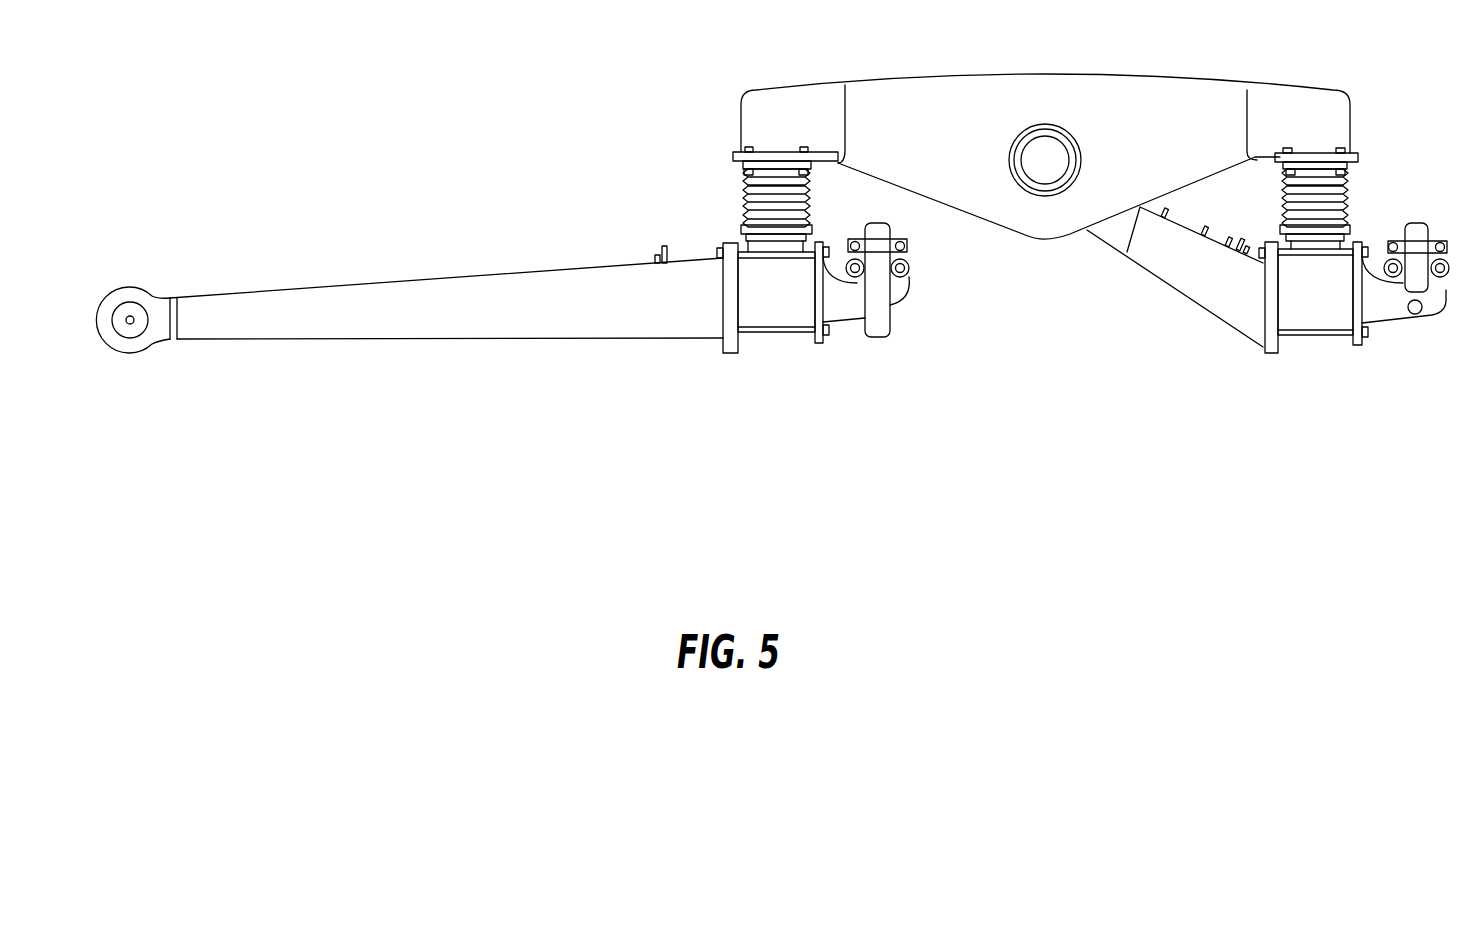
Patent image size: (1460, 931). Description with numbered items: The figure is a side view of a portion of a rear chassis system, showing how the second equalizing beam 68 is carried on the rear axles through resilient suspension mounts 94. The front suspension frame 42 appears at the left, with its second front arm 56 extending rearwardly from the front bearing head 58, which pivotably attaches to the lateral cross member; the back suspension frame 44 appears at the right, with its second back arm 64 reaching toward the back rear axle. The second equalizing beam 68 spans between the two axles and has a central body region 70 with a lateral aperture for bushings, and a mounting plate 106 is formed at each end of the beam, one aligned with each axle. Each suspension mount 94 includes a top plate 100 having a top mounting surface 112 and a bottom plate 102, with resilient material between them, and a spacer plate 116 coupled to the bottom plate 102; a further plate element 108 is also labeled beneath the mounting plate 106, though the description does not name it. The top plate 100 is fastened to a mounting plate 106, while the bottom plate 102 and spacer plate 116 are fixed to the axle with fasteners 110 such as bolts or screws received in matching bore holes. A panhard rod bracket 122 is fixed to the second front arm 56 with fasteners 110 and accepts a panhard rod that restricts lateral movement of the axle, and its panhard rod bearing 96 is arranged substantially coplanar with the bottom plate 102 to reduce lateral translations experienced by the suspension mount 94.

The front suspension frame 42 is at (358, 333).
The back suspension frame 44 is at (1247, 312).
The second front arm 56 is at (308, 298).
The front bearing head 58 is at (122, 302).
The second back arm 64 is at (1178, 258).
The second equalizing beam 68 is at (1076, 73).
The central body region 70 is at (1006, 93).
The resilient suspension mount 94 is at (738, 205).
The panhard rod bearing 96 is at (888, 223).
The top plate 100 is at (845, 85).
The bottom plate 102 is at (817, 227).
The mounting plate 106 is at (758, 152).
The plate 108 is at (743, 166).
The fasteners 110 is at (798, 152).
The top mounting surface 112 is at (740, 152).
The spacer plate 116 is at (742, 237).
The panhard rod bracket 122 is at (837, 313).